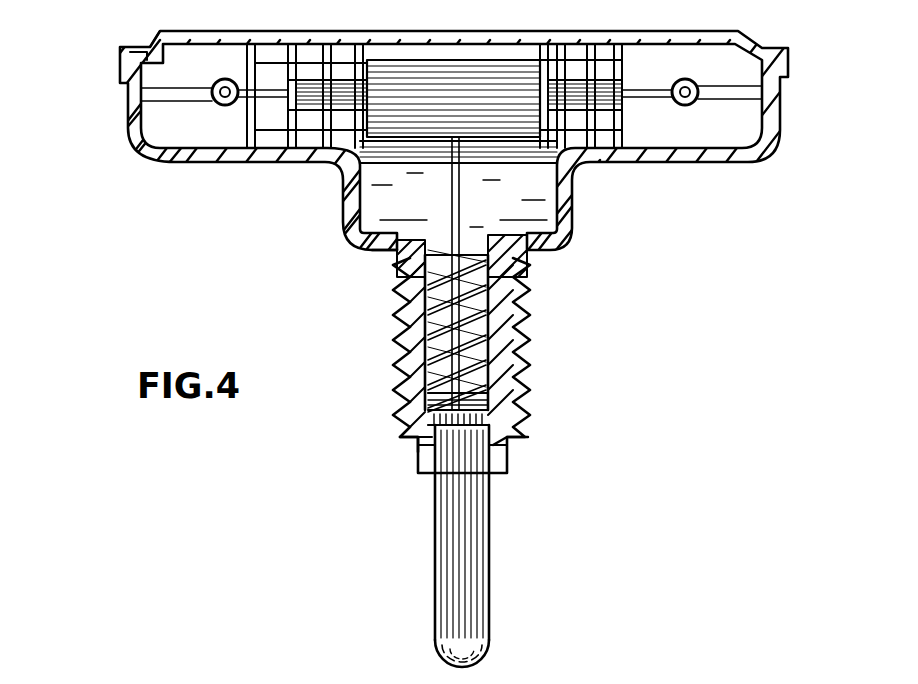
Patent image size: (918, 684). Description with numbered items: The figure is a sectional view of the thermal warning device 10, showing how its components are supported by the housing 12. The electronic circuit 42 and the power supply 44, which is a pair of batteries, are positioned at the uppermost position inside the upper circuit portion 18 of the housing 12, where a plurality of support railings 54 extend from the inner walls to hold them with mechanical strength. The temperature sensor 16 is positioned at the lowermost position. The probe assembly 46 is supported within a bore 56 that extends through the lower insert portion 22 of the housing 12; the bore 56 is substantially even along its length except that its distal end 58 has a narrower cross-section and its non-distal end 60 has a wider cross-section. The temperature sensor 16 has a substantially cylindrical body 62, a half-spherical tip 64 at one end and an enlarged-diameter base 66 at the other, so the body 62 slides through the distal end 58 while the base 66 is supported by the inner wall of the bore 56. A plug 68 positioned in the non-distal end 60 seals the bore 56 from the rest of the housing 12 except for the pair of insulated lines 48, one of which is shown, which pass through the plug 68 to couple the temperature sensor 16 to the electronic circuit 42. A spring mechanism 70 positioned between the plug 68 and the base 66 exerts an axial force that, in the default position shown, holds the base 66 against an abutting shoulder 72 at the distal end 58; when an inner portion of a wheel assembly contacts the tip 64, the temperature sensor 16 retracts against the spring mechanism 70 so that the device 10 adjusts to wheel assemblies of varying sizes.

The thermal warning device 10 is at (803, 60).
The housing 12 is at (777, 173).
The temperature sensor 16 is at (489, 552).
The upper circuit portion 18 is at (119, 93).
The lower insert portion 22 is at (343, 310).
The electronic circuit 42 is at (340, 136).
The power supply 44 is at (463, 163).
The probe assembly 46 is at (531, 375).
The insulated lines 48 is at (445, 199).
The support railings 54 is at (291, 134).
The bore 56 is at (530, 325).
The distal end 58 is at (508, 452).
The non-distal end 60 is at (521, 262).
The body 62 is at (437, 522).
The half-spherical tip 64 is at (442, 653).
The base 66 is at (515, 432).
The plug 68 is at (393, 259).
The spring mechanism 70 is at (524, 292).
The abutting shoulder 72 is at (413, 447).